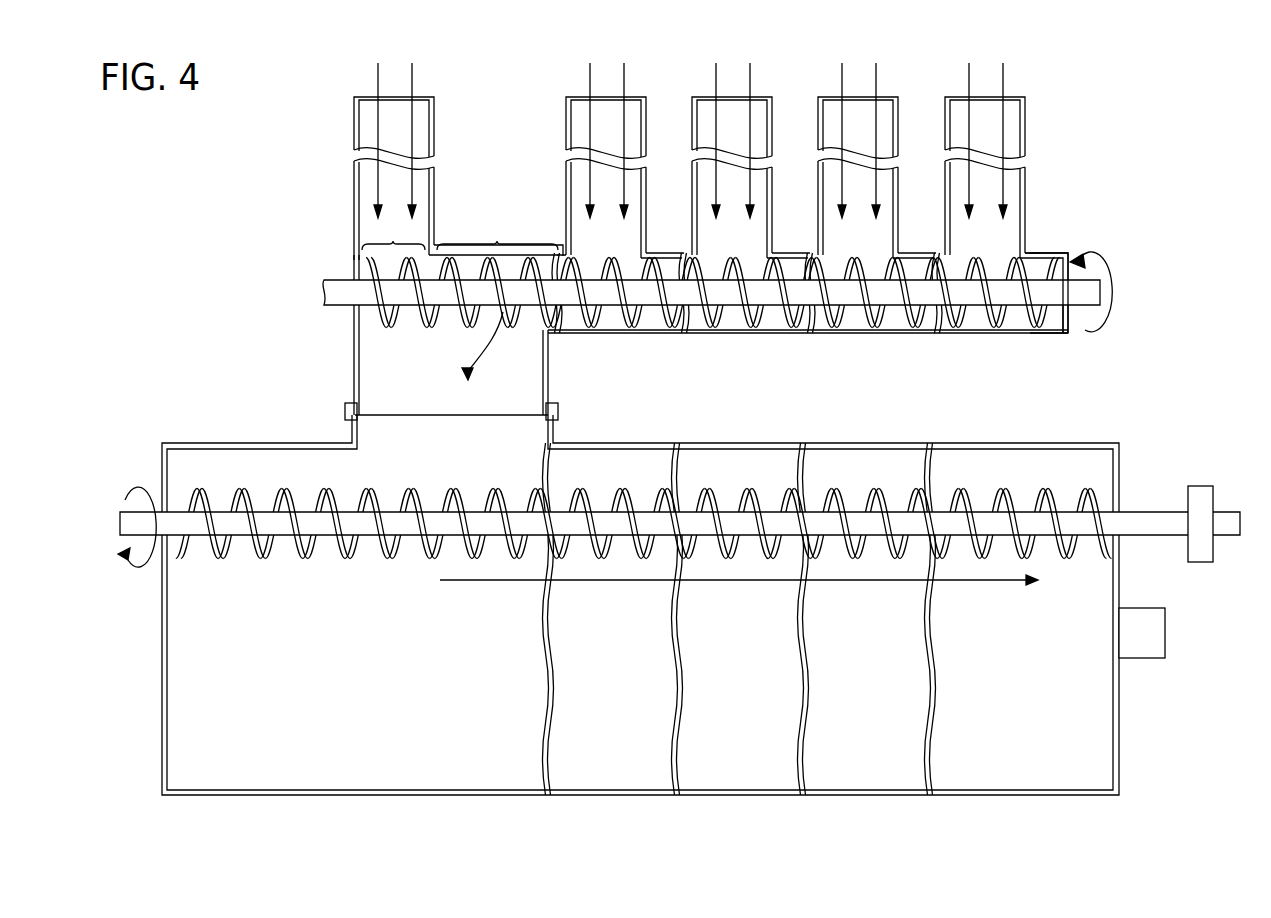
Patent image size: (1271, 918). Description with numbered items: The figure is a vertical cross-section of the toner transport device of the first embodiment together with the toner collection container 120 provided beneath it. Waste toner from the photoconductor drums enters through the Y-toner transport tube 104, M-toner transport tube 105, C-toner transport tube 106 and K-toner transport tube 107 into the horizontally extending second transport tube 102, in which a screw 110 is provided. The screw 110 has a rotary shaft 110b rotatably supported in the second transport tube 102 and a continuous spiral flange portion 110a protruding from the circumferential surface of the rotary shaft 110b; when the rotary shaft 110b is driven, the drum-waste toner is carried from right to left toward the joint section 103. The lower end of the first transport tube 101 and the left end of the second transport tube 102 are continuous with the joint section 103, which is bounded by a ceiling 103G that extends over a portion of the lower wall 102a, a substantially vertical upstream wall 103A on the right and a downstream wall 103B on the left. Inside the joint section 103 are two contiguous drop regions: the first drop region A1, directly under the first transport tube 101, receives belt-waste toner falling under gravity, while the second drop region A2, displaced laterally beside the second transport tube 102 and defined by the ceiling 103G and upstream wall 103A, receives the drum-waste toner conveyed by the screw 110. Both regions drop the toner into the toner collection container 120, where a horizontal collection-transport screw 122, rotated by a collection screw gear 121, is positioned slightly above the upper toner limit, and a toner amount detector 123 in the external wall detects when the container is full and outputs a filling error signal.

The first transport tube 101 is at (436, 121).
The Y-toner transport tube 104 is at (646, 108).
The M-toner transport tube 105 is at (772, 108).
The C-toner transport tube 106 is at (898, 108).
The K-toner transport tube 107 is at (1025, 108).
The second transport tube 102 is at (728, 338).
The lower wall 102a is at (645, 335).
The joint section 103 is at (546, 350).
The upstream wall 103A is at (548, 388).
The downstream wall 103B is at (354, 388).
The ceiling 103G is at (474, 243).
The screw 110 is at (1122, 188).
The spiral flange portion 110a is at (1000, 252).
The rotary shaft 110b is at (1042, 271).
The toner collection container 120 is at (1066, 443).
The collection screw gear 121 is at (1201, 485).
The collection-transport screw 122 is at (954, 488).
The toner amount detector 123 is at (1165, 633).
The first drop region A1 is at (393, 233).
The second drop region A2 is at (497, 233).